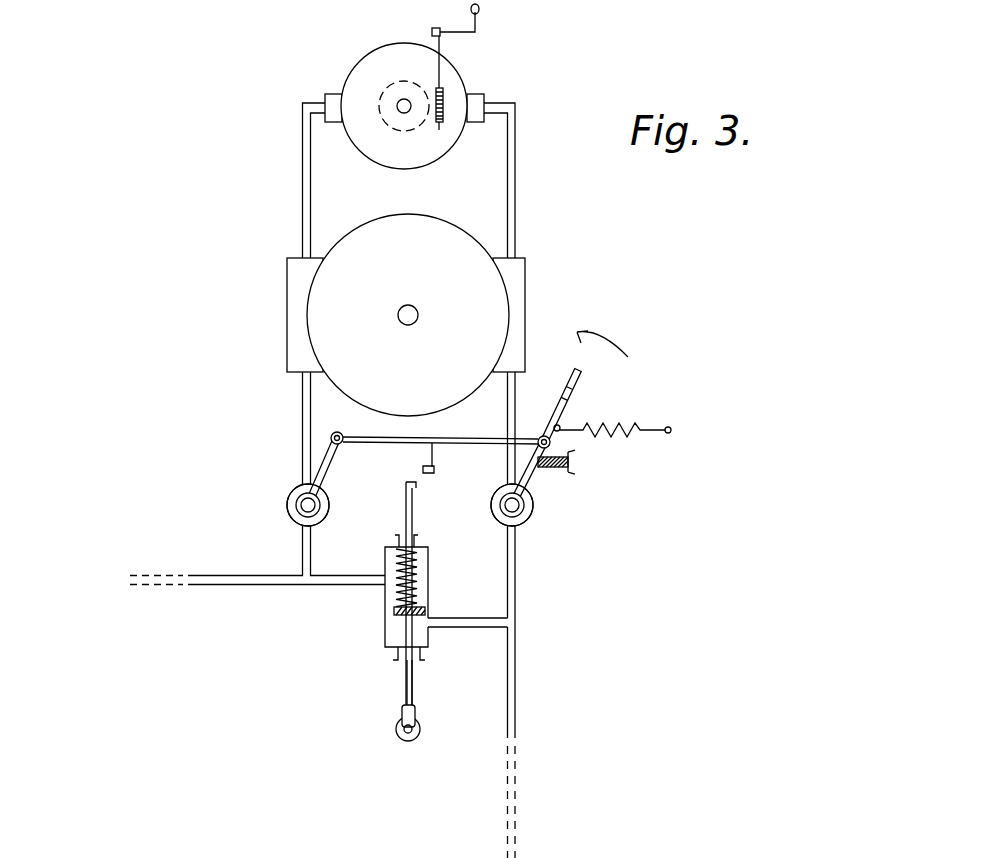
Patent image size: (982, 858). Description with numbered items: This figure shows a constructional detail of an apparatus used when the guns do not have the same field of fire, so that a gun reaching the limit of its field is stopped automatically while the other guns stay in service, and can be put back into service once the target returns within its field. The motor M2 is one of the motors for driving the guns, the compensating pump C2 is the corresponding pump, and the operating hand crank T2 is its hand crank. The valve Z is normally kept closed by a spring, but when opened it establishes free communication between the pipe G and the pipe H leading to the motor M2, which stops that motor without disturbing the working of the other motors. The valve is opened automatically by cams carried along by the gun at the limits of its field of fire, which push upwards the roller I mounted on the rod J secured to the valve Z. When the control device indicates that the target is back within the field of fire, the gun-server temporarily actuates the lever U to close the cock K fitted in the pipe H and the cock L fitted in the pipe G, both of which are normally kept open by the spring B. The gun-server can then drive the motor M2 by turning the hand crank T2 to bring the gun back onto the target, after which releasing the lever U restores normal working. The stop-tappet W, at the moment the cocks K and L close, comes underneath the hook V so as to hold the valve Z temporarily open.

The operating hand crank T2 is at (481, 15).
The compensating pump C2 is at (360, 78).
The motor M2 is at (453, 240).
The lever U is at (575, 395).
The spring B is at (612, 435).
The cock K is at (288, 499).
The cock L is at (534, 505).
The stop-tappet W is at (435, 470).
The hook V is at (404, 488).
The pipe H is at (302, 553).
The pipe G is at (516, 574).
The valve Z is at (400, 612).
The rod J is at (413, 683).
The roller I is at (408, 737).